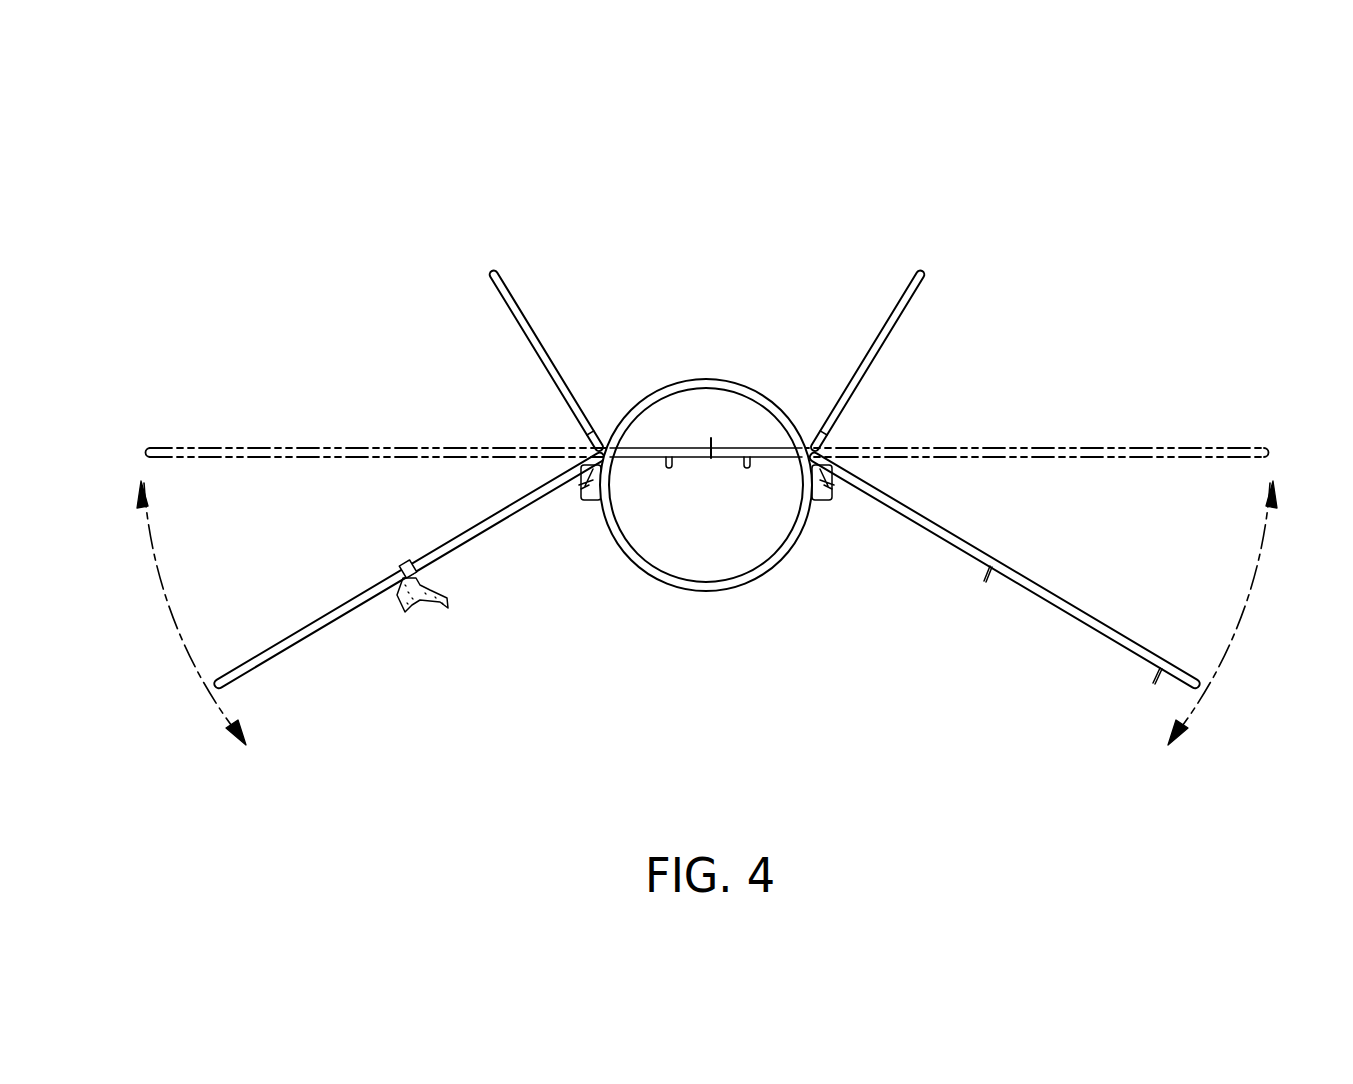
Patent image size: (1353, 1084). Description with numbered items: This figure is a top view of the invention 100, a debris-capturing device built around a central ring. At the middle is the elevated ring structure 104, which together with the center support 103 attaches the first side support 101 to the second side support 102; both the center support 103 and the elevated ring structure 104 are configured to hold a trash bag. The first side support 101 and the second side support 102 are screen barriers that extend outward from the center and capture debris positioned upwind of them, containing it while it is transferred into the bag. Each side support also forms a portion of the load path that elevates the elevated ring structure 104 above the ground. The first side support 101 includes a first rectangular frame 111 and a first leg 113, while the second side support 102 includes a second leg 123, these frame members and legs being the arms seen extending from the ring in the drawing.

The invention 100 is at (196, 200).
The first side support 101 is at (282, 375).
The second side support 102 is at (978, 445).
The center support 103 is at (687, 456).
The elevated ring structure 104 is at (708, 383).
The first rectangular frame 111 is at (444, 545).
The first leg 113 is at (547, 351).
The second leg 123 is at (861, 384).